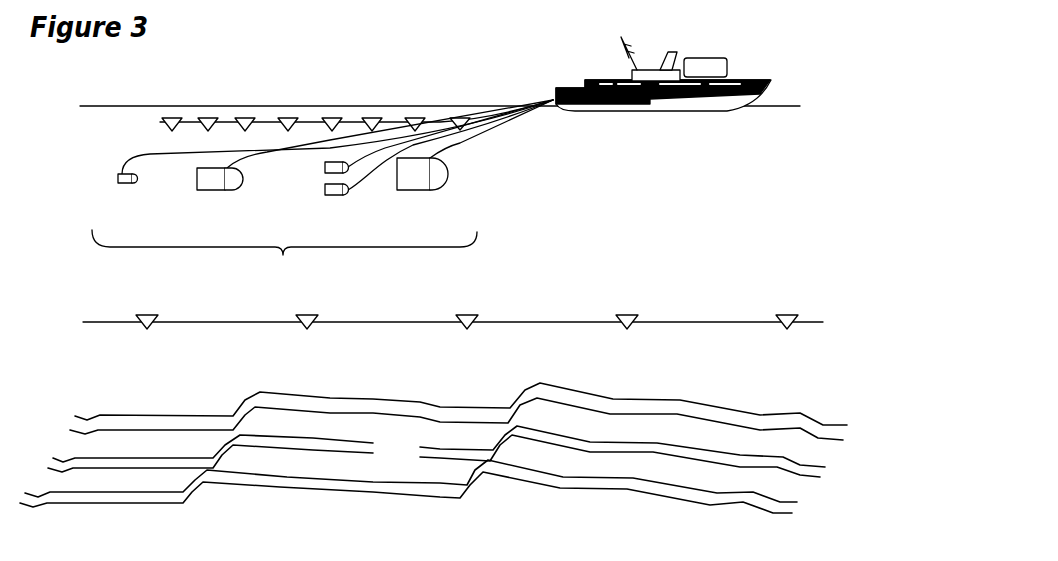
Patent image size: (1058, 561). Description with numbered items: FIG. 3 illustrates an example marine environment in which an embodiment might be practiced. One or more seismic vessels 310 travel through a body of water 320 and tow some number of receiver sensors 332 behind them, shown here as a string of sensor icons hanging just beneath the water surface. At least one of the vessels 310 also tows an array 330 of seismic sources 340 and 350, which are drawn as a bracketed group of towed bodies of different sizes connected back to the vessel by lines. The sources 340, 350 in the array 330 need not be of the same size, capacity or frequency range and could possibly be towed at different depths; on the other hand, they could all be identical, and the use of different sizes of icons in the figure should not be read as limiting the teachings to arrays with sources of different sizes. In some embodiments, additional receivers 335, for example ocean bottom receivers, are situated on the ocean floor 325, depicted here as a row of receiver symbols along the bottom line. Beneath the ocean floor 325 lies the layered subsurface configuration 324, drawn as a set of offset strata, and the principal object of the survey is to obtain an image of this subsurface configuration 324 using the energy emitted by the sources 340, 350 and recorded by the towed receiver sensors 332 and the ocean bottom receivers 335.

The seismic vessel 310 is at (733, 60).
The body of water 320 is at (116, 106).
The subsurface configuration 324 is at (423, 464).
The ocean floor 325 is at (92, 320).
The array 330 is at (300, 194).
The receiver sensors 332 is at (332, 117).
The additional receivers 335 is at (148, 329).
The seismic source 340 is at (325, 191).
The seismic source 350 is at (118, 173).